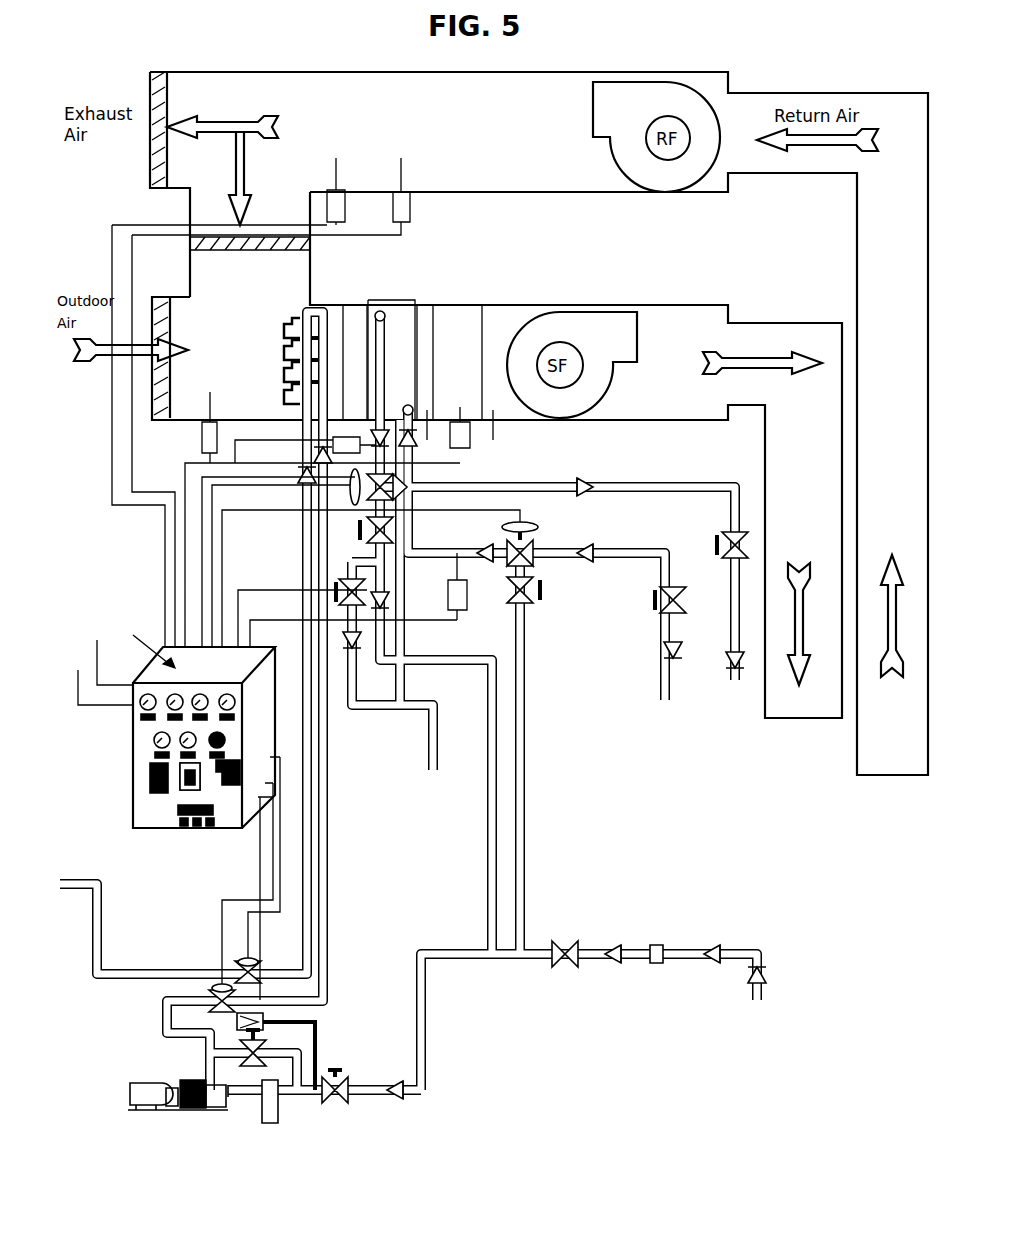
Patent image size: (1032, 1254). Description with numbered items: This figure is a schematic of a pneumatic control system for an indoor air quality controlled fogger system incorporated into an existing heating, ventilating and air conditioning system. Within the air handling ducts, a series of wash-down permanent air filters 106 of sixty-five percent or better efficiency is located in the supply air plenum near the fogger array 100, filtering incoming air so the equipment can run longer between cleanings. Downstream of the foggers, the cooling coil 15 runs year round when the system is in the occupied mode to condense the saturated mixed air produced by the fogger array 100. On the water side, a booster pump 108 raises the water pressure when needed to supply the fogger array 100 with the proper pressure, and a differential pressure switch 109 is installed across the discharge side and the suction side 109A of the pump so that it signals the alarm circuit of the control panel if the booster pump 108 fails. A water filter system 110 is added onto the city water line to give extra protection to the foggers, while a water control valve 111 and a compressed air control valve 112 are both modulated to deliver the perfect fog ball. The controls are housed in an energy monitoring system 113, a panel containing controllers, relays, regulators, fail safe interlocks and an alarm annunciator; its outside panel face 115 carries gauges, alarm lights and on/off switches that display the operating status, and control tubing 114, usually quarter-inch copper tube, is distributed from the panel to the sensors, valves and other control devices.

The cooling coil 15 is at (404, 291).
The fogger array 100 is at (268, 359).
The wash-down permanent air filters 106 is at (352, 297).
The booster pump 108 is at (118, 1090).
The differential pressure switch 109 is at (318, 1022).
The booster pump suction side connection 109A is at (325, 1061).
The water filter system 110 is at (290, 1108).
The water control valve 111 is at (165, 1003).
The compressed air control valve 112 is at (240, 962).
The energy monitoring system 113 is at (275, 731).
The control tubing 114 is at (152, 545).
The outside panel face 115 is at (197, 840).